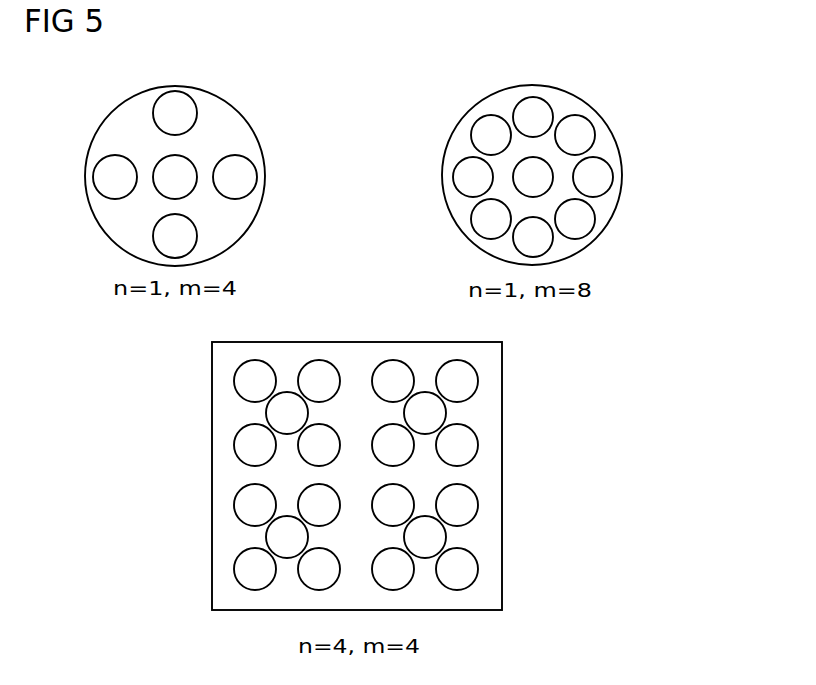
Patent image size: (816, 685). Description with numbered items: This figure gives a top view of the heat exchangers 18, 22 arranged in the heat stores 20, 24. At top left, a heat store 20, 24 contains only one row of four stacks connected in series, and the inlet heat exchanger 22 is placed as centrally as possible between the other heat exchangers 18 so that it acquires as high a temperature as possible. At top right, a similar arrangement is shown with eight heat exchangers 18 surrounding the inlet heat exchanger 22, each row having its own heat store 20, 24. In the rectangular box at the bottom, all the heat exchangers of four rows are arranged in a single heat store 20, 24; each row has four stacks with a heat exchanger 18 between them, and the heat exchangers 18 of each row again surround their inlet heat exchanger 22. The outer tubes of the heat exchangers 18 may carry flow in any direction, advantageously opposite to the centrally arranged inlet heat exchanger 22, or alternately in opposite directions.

The heat exchanger 18 is at (182, 92).
The inlet heat exchanger 22 is at (194, 166).
The heat store 20 is at (408, 347).
The heat store 24 is at (265, 160).